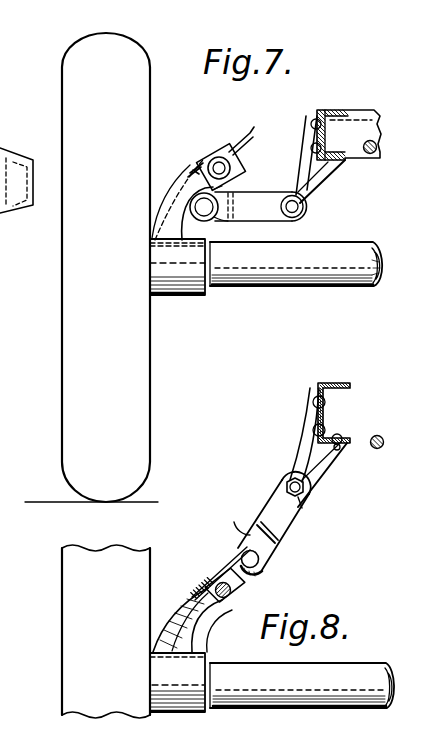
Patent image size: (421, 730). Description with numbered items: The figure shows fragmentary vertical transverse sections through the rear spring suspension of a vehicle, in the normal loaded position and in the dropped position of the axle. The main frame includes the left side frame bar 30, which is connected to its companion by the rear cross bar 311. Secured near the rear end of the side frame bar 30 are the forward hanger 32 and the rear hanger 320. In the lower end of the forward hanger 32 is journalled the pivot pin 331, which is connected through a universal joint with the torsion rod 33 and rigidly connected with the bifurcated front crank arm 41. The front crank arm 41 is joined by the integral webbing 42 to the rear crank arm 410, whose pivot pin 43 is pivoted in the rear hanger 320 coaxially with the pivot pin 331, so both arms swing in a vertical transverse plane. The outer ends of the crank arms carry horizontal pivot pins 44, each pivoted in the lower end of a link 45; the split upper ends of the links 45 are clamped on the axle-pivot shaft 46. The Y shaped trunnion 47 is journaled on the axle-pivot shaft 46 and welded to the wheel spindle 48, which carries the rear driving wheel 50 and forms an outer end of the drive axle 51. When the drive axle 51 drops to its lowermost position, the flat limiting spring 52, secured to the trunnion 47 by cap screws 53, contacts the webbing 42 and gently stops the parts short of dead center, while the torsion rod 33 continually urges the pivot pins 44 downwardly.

In FIG. 7, the side frame bar 30 is at (335, 109).
In FIG. 8, the side frame bar 30 is at (318, 383).
In FIG. 7, the forward hanger 32 is at (306, 155).
In FIG. 8, the forward hanger 32 is at (302, 449).
In FIG. 7, the torsion rod 33 is at (368, 155).
In FIG. 8, the torsion rod 33 is at (378, 435).
In FIG. 8, the front crank arm 41 is at (282, 488).
In FIG. 7, the webbing 42 is at (249, 222).
In FIG. 8, the webbing 42 is at (247, 546).
In FIG. 7, the pivot pin 43 is at (305, 210).
In FIG. 8, the pivot pin 43 is at (305, 498).
In FIG. 7, the pivot pin 44 is at (216, 221).
In FIG. 8, the pivot pin 44 is at (262, 565).
In FIG. 7, the link 45 is at (238, 190).
In FIG. 8, the link 45 is at (217, 608).
In FIG. 7, the axle-pivot shaft 46 is at (236, 161).
In FIG. 8, the axle-pivot shaft 46 is at (231, 601).
In FIG. 7, the Y shaped trunnion 47 is at (170, 196).
In FIG. 7, the wheel spindle 48 is at (158, 295).
In FIG. 8, the wheel spindle 48 is at (158, 682).
In FIG. 7, the driving wheel 50 is at (62, 437).
In FIG. 8, the driving wheel 50 is at (62, 585).
In FIG. 7, the drive axle 51 is at (333, 288).
In FIG. 8, the drive axle 51 is at (368, 663).
In FIG. 7, the limiting spring 52 is at (256, 124).
In FIG. 8, the limiting spring 52 is at (223, 578).
In FIG. 7, the cap screw 53 is at (186, 172).
In FIG. 8, the cap screw 53 is at (196, 591).
In FIG. 7, the rear cross bar 311 is at (22, 165).
In FIG. 7, the rear hanger 320 is at (327, 181).
In FIG. 8, the rear hanger 320 is at (322, 475).
In FIG. 8, the pivot pin 331 is at (300, 506).
In FIG. 7, the rear crank arm 410 is at (284, 221).